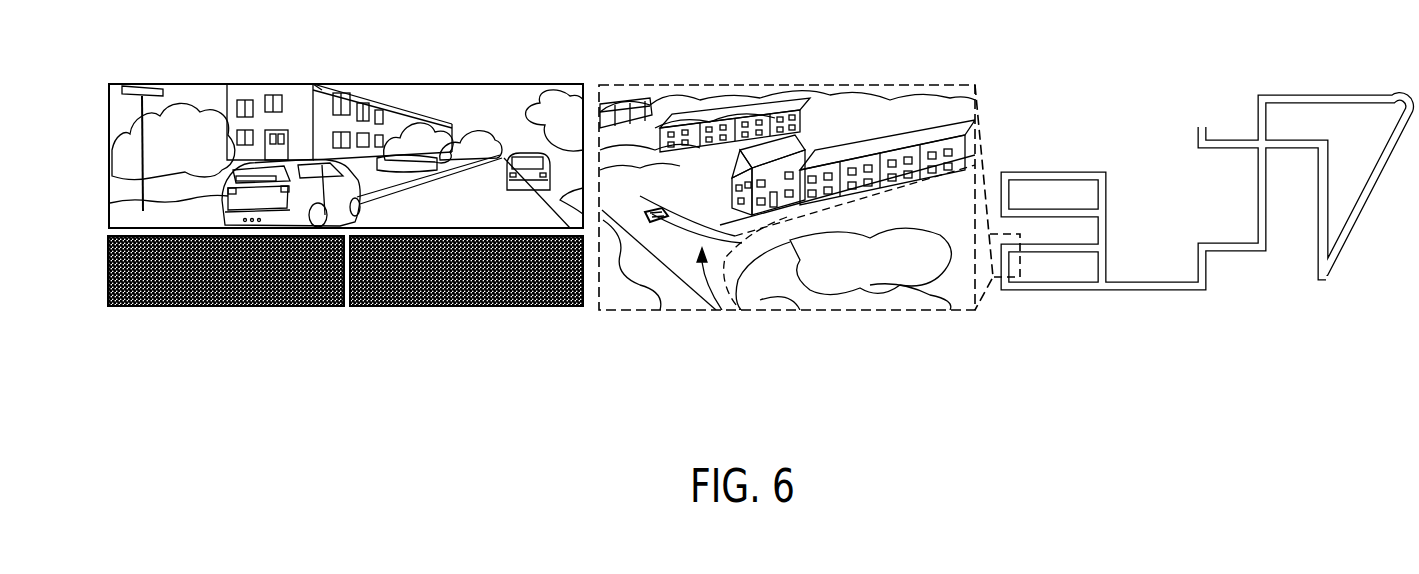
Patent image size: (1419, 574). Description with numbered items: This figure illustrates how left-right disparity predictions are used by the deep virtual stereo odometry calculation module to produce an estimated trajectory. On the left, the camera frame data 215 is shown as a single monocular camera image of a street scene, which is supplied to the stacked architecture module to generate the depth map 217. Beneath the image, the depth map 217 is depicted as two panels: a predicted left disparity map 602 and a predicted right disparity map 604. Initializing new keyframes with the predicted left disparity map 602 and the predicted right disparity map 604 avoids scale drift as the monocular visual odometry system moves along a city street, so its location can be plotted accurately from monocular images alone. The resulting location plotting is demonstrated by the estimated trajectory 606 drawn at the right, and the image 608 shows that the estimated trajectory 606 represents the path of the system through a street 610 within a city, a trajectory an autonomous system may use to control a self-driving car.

The camera frame data 215 is at (397, 83).
The depth map 217 is at (447, 380).
The predicted left disparity map 602 is at (183, 306).
The predicted right disparity map 604 is at (498, 306).
The estimated trajectory 606 is at (1247, 321).
The image 608 is at (887, 310).
The street 610 is at (741, 310).